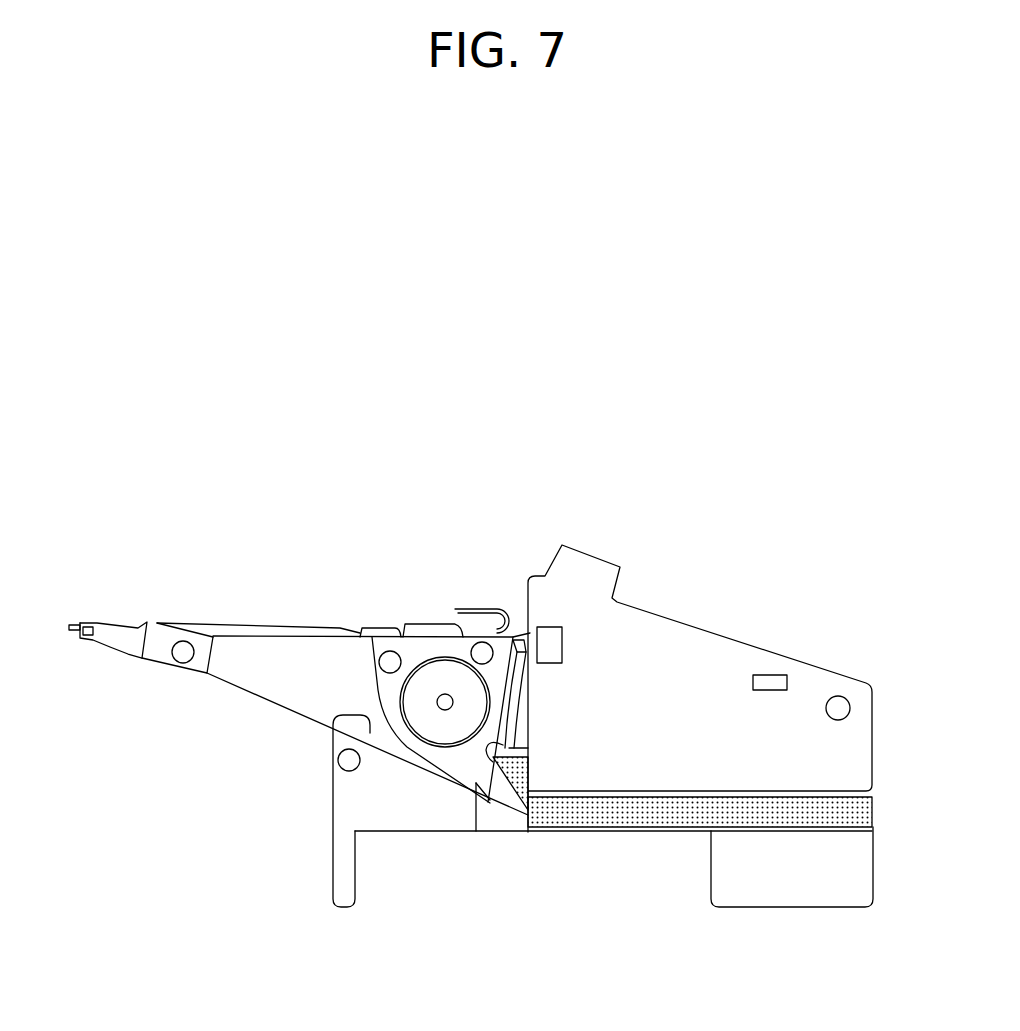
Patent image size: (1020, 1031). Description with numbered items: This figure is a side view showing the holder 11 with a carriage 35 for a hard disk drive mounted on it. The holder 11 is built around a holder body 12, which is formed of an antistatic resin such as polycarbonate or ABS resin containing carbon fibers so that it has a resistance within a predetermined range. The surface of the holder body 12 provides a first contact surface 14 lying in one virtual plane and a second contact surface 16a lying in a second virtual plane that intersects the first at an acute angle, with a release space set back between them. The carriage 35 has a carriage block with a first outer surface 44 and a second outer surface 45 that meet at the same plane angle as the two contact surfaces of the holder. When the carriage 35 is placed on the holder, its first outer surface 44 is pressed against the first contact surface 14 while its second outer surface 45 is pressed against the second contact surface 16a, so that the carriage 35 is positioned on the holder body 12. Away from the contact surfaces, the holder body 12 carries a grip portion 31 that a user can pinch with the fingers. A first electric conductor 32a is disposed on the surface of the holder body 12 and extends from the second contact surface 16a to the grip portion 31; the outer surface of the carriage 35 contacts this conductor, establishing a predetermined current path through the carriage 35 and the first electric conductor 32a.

The holder 11 is at (725, 616).
The holder body 12 is at (333, 858).
The first contact surface 14 is at (333, 720).
The second contact surface 16a is at (528, 742).
The grip portion 31 is at (857, 846).
The first electric conductor 32a is at (615, 817).
The carriage 35 is at (284, 608).
The first outer surface 44 is at (477, 805).
The second outer surface 45 is at (528, 692).